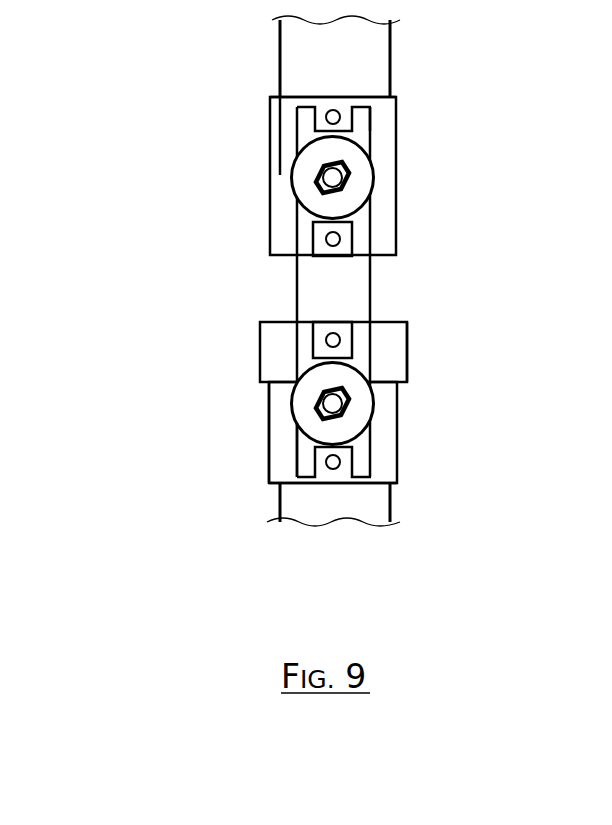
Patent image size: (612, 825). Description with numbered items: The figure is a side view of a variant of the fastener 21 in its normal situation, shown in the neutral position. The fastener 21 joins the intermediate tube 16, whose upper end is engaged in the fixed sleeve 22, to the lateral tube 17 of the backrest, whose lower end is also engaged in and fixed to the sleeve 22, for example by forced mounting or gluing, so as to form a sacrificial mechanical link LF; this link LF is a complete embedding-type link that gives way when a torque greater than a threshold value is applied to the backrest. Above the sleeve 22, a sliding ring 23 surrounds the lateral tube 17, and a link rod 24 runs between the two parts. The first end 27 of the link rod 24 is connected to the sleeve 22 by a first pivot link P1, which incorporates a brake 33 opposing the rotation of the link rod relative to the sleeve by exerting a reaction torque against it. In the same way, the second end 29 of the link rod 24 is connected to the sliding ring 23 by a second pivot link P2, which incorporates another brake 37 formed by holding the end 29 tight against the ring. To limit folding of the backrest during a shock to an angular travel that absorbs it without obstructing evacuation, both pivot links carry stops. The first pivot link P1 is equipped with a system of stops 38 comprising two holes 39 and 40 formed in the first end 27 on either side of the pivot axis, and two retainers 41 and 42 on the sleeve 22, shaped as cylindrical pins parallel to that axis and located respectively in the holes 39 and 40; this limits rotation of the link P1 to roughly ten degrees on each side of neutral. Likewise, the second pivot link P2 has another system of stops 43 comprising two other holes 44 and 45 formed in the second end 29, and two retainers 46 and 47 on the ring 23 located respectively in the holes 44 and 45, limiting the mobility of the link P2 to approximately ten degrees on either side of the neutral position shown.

The intermediate tube 16 is at (290, 500).
The lateral tube 17 is at (292, 53).
The fastener 21 is at (163, 232).
The fixed sleeve 22 is at (383, 398).
The sliding ring 23 is at (383, 183).
The link rod 24 is at (340, 297).
The first end of the link rod 27 is at (370, 438).
The second end of the link rod 29 is at (372, 132).
The brake 33 is at (292, 418).
The brake 37 is at (290, 157).
The system of stops 38 is at (347, 490).
The hole 39 is at (313, 460).
The hole 40 is at (313, 340).
The retainer 41 is at (352, 462).
The retainer 42 is at (352, 340).
The system of stops 43 is at (345, 97).
The hole 44 is at (313, 238).
The hole 45 is at (298, 117).
The retainer 46 is at (352, 238).
The retainer 47 is at (352, 120).
The sacrificial mechanical link LF is at (428, 372).
The first pivot link P1 is at (278, 398).
The second pivot link P2 is at (278, 185).